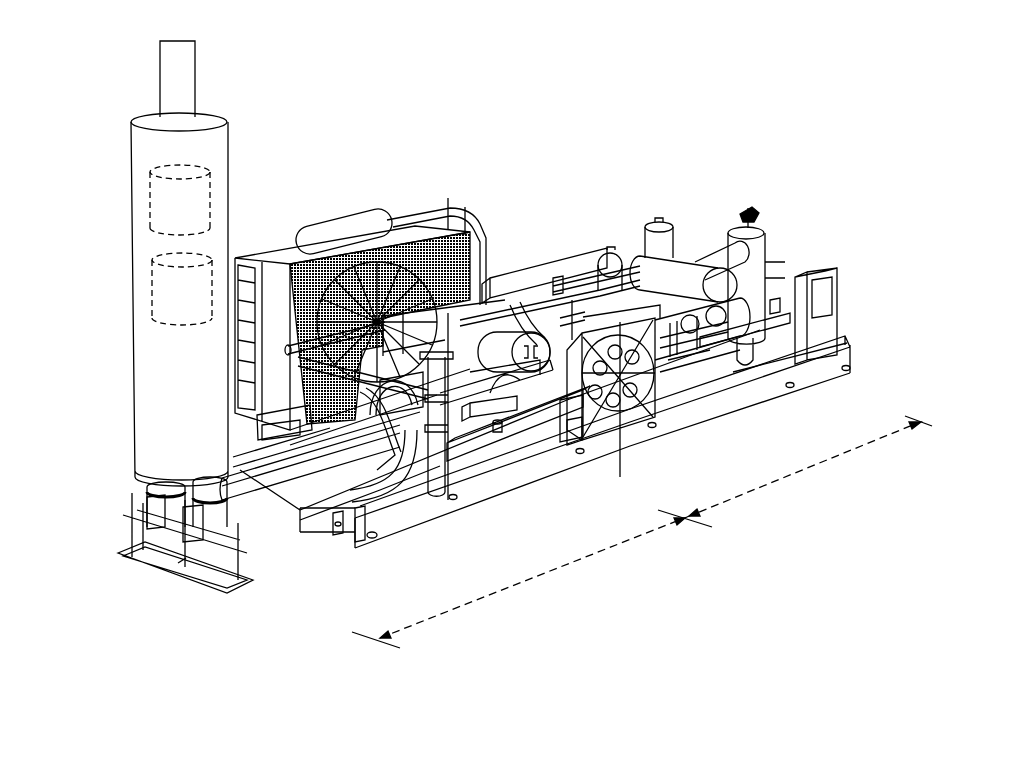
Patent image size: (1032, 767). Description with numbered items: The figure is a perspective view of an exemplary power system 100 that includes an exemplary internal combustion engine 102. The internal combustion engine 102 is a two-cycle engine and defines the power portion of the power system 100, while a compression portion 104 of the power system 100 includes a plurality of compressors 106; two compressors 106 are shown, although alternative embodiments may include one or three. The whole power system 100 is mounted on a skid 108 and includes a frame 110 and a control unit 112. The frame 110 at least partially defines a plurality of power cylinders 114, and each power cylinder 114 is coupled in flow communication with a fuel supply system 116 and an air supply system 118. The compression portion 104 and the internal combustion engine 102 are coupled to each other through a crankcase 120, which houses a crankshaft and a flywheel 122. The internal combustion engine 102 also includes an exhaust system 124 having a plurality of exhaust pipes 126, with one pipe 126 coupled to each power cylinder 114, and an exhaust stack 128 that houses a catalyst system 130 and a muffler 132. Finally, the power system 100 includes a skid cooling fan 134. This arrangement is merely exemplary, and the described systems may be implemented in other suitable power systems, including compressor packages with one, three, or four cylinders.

The power system 100 is at (380, 100).
The internal combustion engine 102 is at (383, 565).
The compression portion 104 is at (776, 425).
The compressors 106 is at (715, 257).
The skid 108 is at (529, 495).
The frame 110 is at (533, 378).
The control unit 112 is at (838, 270).
The power cylinders 114 is at (384, 522).
The fuel supply system 116 is at (363, 368).
The air supply system 118 is at (485, 280).
The crankcase 120 is at (570, 325).
The flywheel 122 is at (650, 393).
The exhaust system 124 is at (112, 320).
The exhaust pipes 126 is at (277, 510).
The exhaust stack 128 is at (132, 394).
The catalyst system 130 is at (176, 297).
The muffler 132 is at (176, 208).
The skid cooling fan 134 is at (262, 250).